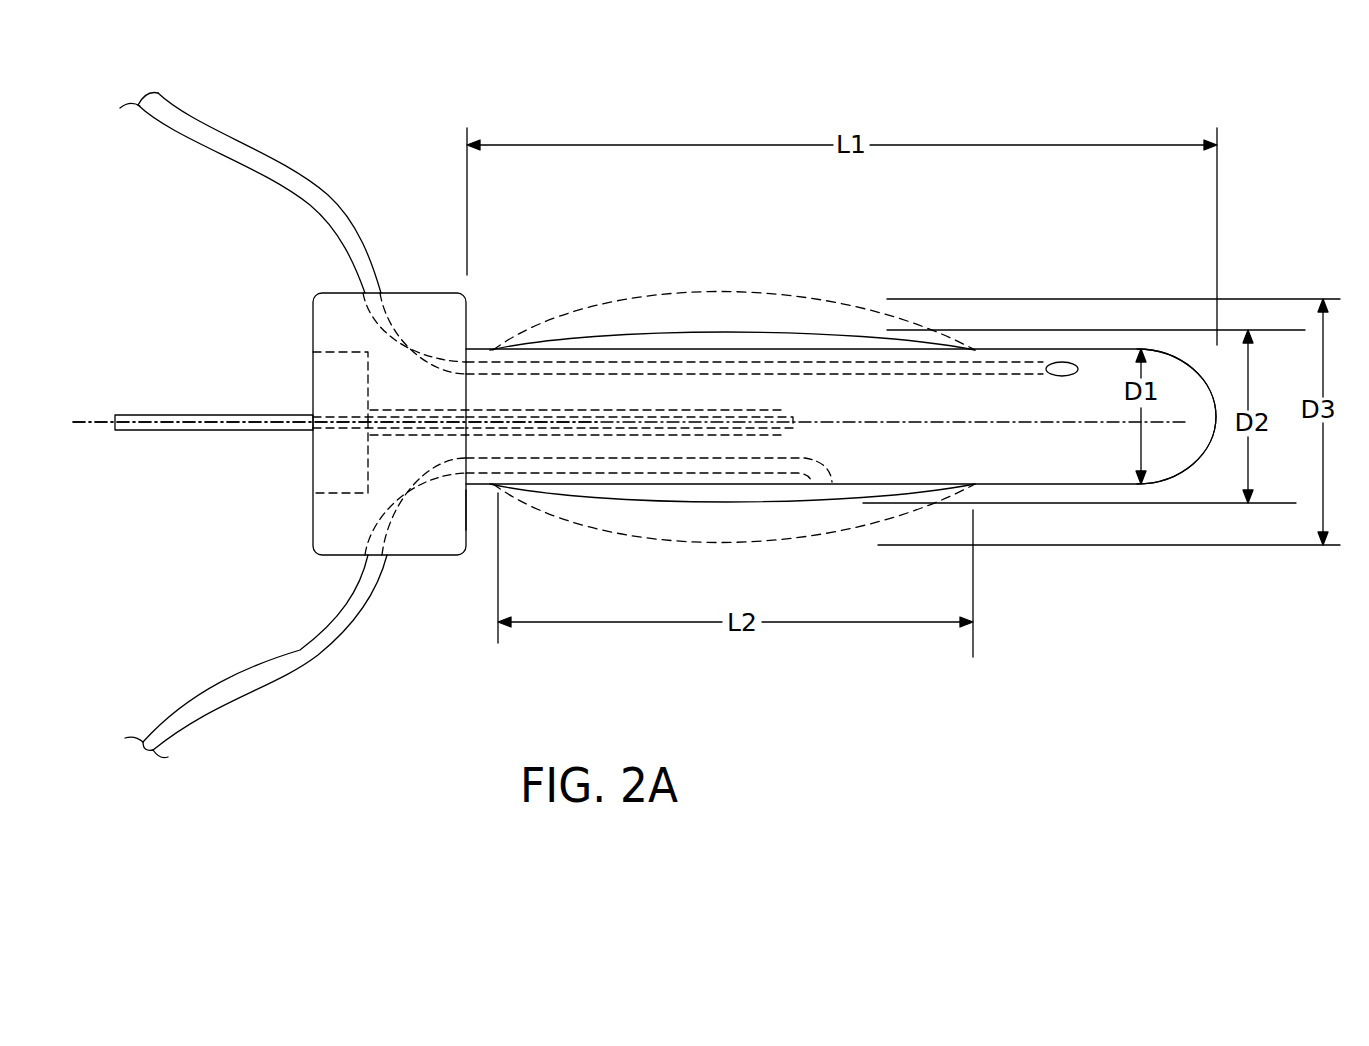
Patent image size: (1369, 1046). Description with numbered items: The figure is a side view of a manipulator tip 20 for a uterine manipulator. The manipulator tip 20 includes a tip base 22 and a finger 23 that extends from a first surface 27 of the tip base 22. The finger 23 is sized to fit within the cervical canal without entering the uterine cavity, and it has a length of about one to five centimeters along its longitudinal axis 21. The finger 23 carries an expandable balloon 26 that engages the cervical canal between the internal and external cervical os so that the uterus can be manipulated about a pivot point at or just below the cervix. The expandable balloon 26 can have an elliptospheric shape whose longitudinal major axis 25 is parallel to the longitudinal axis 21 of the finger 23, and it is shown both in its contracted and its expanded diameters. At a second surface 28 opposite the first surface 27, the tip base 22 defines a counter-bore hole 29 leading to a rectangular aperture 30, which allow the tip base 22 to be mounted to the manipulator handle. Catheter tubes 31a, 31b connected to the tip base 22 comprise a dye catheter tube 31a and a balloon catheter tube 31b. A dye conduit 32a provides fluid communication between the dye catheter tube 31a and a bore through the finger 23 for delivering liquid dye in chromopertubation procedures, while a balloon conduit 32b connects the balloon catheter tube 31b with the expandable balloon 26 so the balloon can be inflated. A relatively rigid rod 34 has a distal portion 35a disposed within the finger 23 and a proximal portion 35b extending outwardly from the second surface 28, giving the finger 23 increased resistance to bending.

The manipulator tip 20 is at (1274, 204).
The longitudinal axis 21 is at (92, 427).
The longitudinal (major) axis 25 is at (336, 478).
The tip base 22 is at (418, 303).
The finger 23 is at (1094, 456).
The expandable balloon 26 is at (657, 538).
The first surface 27 is at (470, 508).
The second surface 28 is at (313, 492).
The counter-bore hole 29 is at (340, 352).
The rectangular aperture 30 is at (387, 437).
The dye catheter tube 31a is at (242, 162).
The balloon catheter tube 31b is at (215, 705).
The dye conduit 32a is at (437, 353).
The balloon conduit 32b is at (408, 520).
The rod 34 is at (203, 432).
The distal portion 35a is at (765, 410).
The proximal portion 35b is at (117, 413).